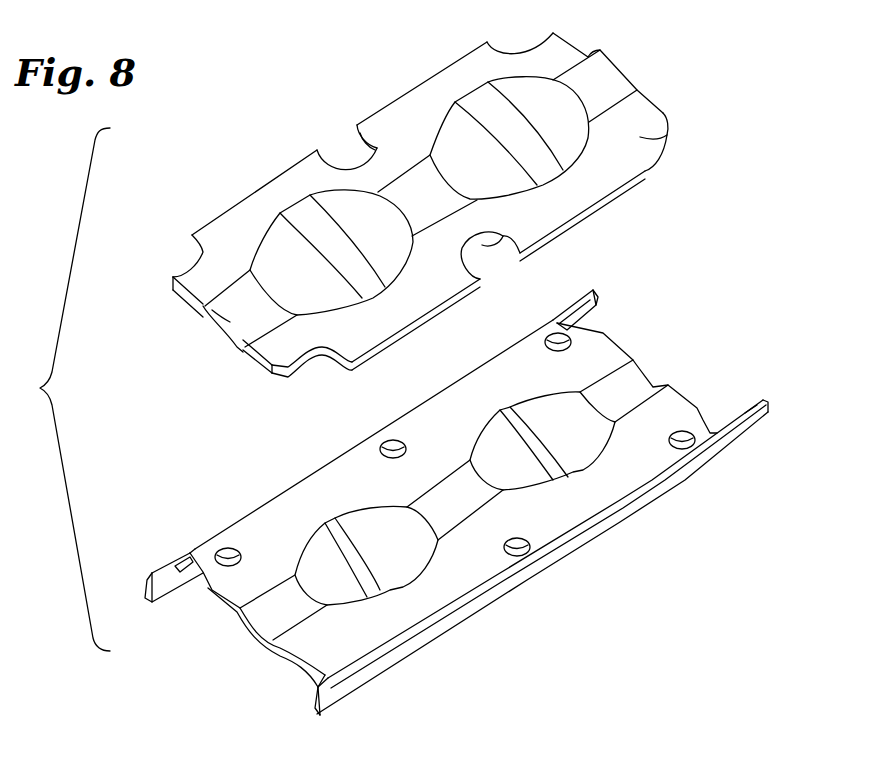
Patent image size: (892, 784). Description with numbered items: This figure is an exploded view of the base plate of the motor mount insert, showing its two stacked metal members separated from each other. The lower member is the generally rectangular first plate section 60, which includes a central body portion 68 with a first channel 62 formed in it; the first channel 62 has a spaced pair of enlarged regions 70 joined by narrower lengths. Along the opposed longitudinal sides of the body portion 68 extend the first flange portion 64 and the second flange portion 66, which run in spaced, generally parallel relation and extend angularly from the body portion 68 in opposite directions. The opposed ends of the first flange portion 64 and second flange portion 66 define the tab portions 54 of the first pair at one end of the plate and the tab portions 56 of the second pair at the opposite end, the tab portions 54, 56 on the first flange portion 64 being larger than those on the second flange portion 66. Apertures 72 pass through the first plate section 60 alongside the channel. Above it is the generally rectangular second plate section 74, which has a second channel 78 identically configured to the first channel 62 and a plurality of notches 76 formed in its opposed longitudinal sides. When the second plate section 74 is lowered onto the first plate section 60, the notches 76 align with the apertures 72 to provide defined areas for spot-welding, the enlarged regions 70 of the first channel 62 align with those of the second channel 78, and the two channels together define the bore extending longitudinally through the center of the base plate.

The tab portions of the first pair 54 is at (593, 307).
The tab portions of the second pair 56 is at (160, 594).
The first plate section 60 is at (480, 508).
The first channel 62 is at (443, 510).
The first flange portion 64 is at (404, 652).
The second flange portion 66 is at (193, 552).
The body portion 68 is at (630, 473).
The enlarged regions 70 is at (533, 422).
The apertures 72 is at (390, 447).
The second plate section 74 is at (420, 194).
The notches 76 is at (375, 148).
The second channel 78 is at (221, 318).